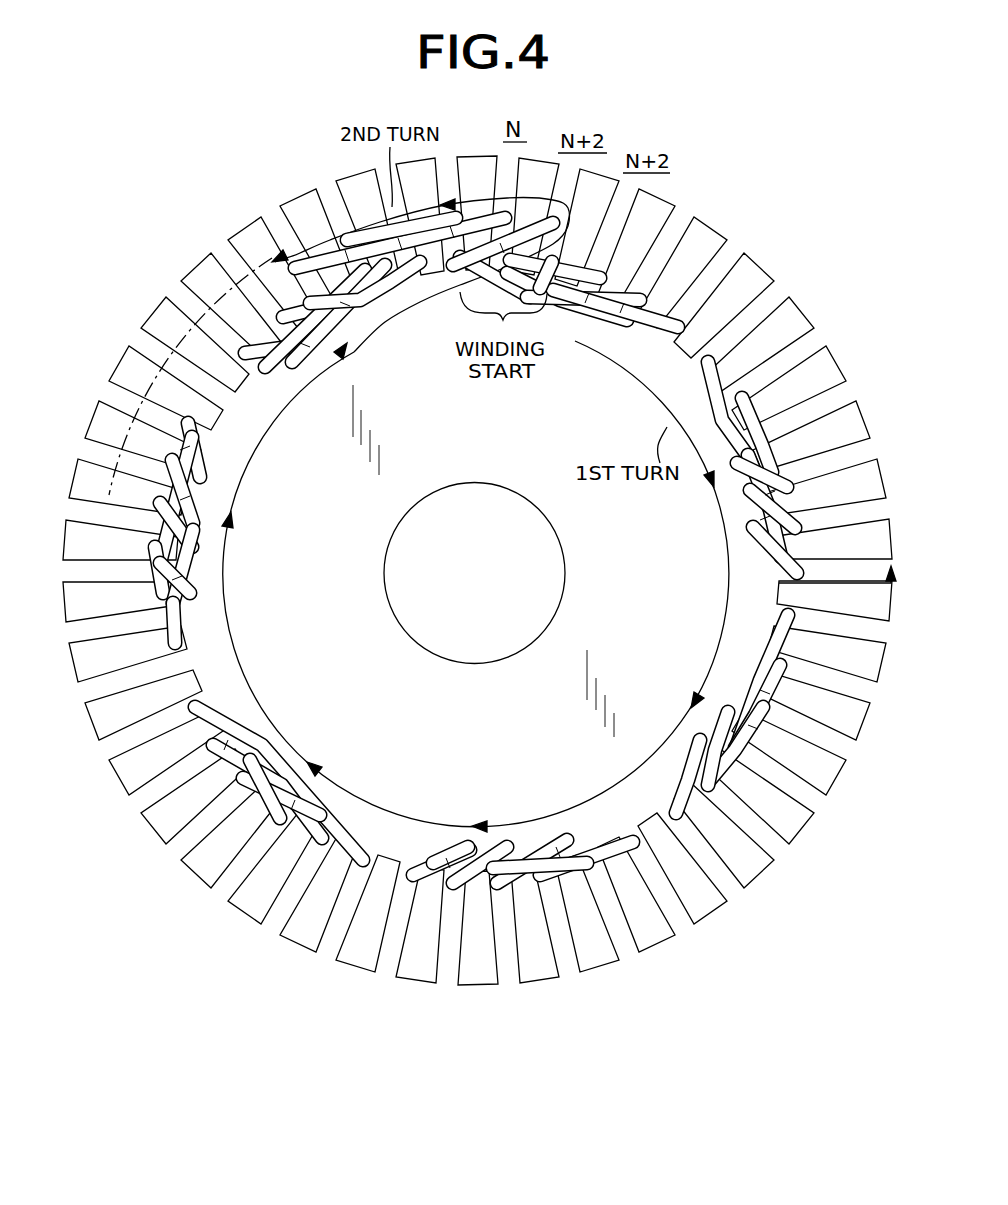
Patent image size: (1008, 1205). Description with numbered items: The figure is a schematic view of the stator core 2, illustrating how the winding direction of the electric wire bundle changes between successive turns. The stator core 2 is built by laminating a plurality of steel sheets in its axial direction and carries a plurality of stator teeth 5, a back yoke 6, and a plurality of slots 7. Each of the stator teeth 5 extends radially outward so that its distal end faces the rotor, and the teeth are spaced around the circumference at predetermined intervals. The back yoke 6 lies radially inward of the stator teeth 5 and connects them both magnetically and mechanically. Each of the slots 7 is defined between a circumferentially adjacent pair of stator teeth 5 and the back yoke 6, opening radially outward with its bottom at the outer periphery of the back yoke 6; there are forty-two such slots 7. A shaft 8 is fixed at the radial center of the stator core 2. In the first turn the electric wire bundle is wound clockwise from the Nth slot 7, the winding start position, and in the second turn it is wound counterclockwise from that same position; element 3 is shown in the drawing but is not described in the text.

The stator core 2 is at (477, 605).
The slot 3 is at (728, 375).
The stator teeth 5 is at (485, 976).
The back yoke 6 is at (513, 832).
The slots 7 is at (511, 965).
The shaft 8 is at (497, 642).